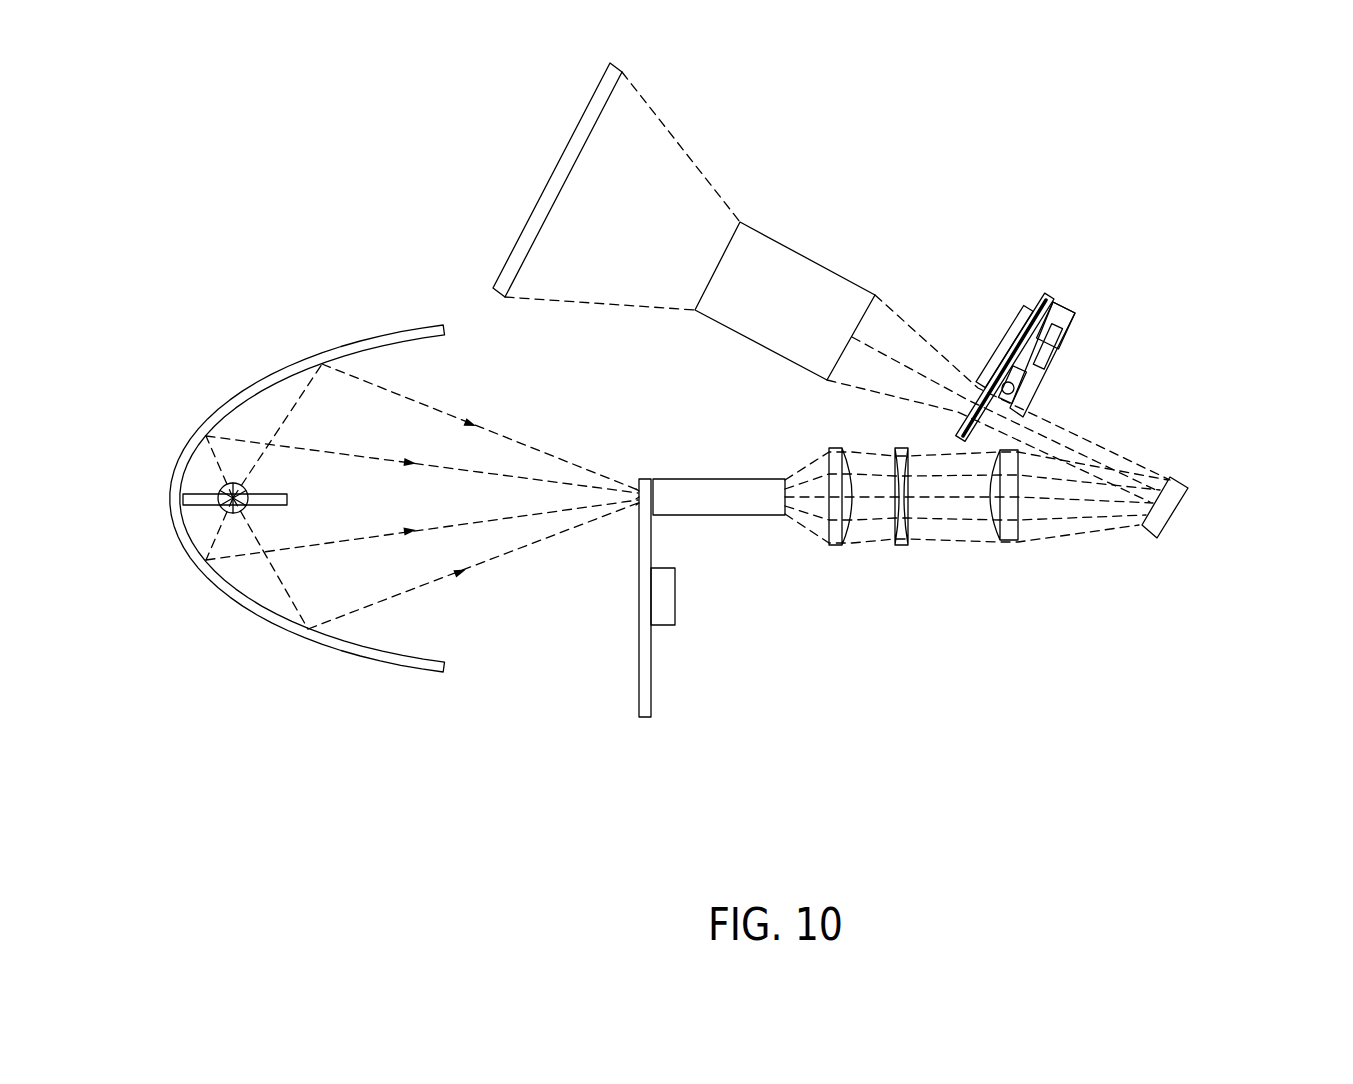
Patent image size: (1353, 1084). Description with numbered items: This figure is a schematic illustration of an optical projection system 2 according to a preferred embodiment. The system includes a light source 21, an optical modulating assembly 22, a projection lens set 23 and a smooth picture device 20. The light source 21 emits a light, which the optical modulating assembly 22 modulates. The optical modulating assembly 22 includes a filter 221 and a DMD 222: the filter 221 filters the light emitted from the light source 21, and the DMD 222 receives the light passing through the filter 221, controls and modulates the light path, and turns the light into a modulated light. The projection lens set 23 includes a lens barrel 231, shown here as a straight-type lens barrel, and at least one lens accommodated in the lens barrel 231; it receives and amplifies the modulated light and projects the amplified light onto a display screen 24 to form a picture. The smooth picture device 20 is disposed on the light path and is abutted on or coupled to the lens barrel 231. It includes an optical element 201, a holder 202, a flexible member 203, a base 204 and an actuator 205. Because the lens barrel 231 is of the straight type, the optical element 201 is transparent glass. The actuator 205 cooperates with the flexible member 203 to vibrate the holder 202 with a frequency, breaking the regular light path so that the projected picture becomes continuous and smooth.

The optical projection system 2 is at (249, 177).
The smooth picture device 20 is at (1232, 228).
The optical element 201 is at (976, 396).
The holder 202 is at (1000, 355).
The flexible member 203 is at (1036, 300).
The base 204 is at (1078, 320).
The actuator 205 is at (1057, 352).
The light source 21 is at (210, 507).
The optical modulating assembly 22 is at (1098, 737).
The filter 221 is at (651, 675).
The DMD 222 is at (1163, 515).
The projection lens set 23 is at (812, 291).
The lens barrel 231 is at (798, 262).
The display screen 24 is at (558, 177).